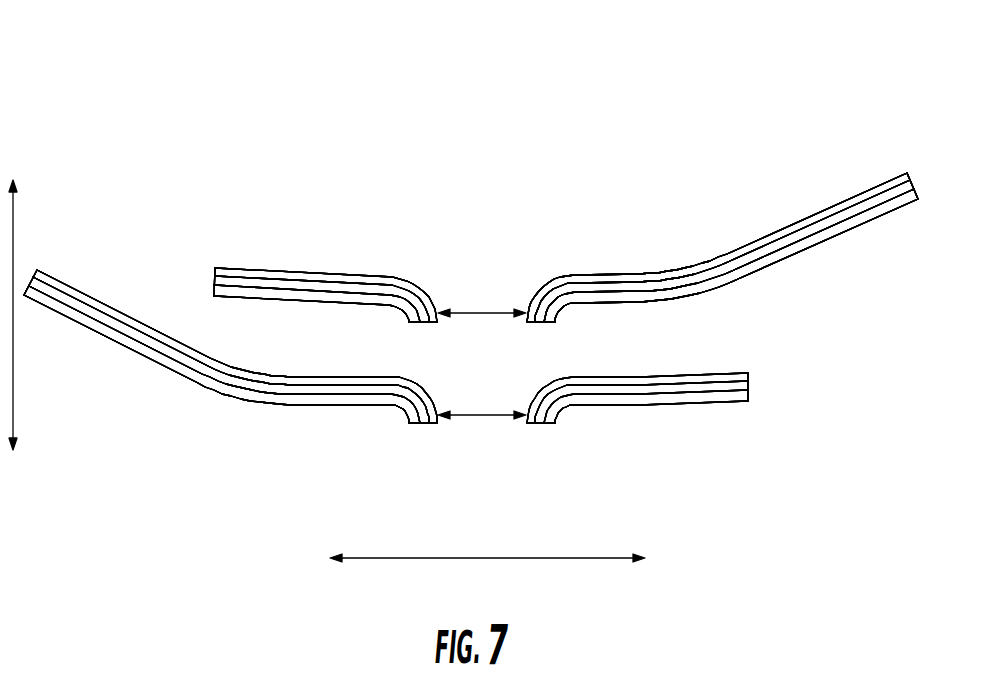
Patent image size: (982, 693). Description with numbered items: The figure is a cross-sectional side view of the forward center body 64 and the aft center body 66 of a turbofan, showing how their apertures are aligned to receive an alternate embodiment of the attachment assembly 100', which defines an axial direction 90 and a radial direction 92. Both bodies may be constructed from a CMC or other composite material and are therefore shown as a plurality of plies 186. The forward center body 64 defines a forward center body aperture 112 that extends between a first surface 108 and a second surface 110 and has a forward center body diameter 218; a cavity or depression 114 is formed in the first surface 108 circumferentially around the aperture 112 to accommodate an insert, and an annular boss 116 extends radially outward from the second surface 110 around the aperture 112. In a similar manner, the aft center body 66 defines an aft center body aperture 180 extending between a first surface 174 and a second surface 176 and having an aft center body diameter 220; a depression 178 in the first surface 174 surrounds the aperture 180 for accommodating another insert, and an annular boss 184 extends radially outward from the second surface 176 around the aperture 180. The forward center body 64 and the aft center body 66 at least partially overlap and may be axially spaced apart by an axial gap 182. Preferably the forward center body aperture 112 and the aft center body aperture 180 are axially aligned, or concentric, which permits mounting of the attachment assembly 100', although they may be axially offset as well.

The attachment assembly 100' is at (471, 219).
The forward center body 64 is at (123, 165).
The aft center body 66 is at (310, 224).
The axial direction 90 is at (17, 232).
The radial direction 92 is at (568, 557).
The first surface 108 is at (157, 323).
The second surface 110 is at (160, 357).
The forward center body aperture 112 is at (489, 442).
The depression 114 is at (661, 342).
The annular boss 116 is at (425, 427).
The first surface 174 is at (695, 267).
The second surface 176 is at (767, 263).
The depression 178 is at (617, 216).
The aft center body aperture 180 is at (504, 288).
The axial gap 182 is at (230, 329).
The annular boss 184 is at (426, 322).
The plies 186 is at (50, 285).
The forward center body diameter 218 is at (500, 413).
The aft center body diameter 220 is at (490, 313).